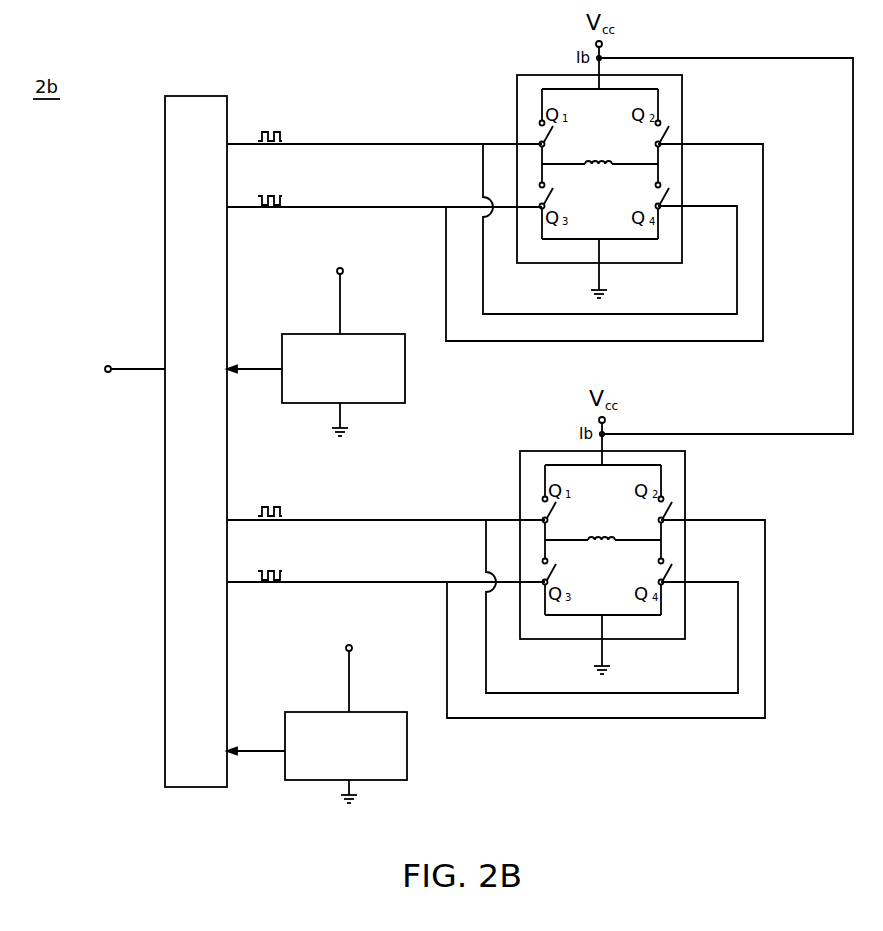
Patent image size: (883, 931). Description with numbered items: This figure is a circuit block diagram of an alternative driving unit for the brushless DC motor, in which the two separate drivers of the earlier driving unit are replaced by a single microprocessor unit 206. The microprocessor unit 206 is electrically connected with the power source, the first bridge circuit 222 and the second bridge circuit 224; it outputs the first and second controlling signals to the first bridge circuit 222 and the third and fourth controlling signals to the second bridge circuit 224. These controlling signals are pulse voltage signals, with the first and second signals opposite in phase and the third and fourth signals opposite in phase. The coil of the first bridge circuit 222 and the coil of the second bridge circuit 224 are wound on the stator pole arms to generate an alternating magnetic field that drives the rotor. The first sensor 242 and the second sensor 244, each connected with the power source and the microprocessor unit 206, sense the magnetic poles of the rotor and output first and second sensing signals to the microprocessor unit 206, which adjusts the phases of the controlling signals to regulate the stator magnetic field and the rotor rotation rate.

The microprocessor unit 206 is at (165, 283).
The first bridge circuit 222 is at (682, 92).
The second bridge circuit 224 is at (685, 469).
The first sensor 242 is at (405, 386).
The second sensor 244 is at (407, 761).